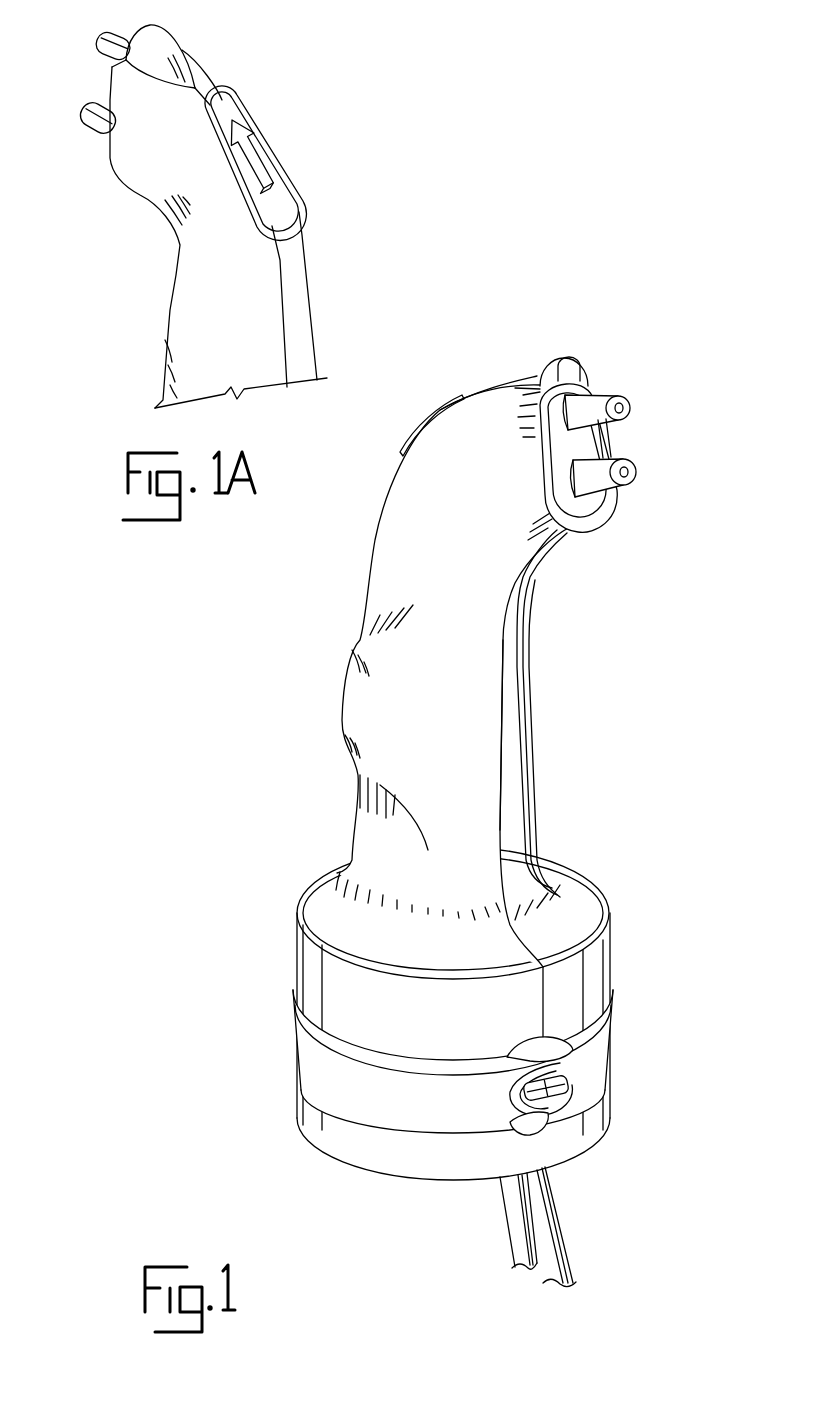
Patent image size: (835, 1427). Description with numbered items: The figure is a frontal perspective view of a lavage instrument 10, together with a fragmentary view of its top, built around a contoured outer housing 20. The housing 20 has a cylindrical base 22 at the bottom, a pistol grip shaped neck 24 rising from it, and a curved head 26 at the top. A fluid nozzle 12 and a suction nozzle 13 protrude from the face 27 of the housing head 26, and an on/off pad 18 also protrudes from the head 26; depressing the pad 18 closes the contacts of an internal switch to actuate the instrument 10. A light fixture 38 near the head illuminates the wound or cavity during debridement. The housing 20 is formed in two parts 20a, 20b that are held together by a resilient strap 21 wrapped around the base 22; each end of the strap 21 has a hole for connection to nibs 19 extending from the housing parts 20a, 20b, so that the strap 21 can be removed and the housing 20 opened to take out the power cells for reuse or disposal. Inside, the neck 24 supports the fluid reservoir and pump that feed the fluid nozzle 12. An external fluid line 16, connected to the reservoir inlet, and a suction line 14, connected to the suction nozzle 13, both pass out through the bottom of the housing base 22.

In FIG. 1, the lavage instrument 10 is at (203, 649).
In FIG. 1A, the fluid nozzle 12 is at (117, 40).
In FIG. 1, the fluid nozzle 12 is at (590, 408).
In FIG. 1A, the suction nozzle 13 is at (92, 105).
In FIG. 1, the suction nozzle 13 is at (623, 465).
In FIG. 1, the suction line 14 is at (518, 1225).
In FIG. 1, the external fluid line 16 is at (540, 1206).
In FIG. 1A, the on/off pad 18 is at (263, 170).
In FIG. 1, the on/off pad 18 is at (422, 420).
In FIG. 1, the nibs 19 is at (597, 1057).
In FIG. 1A, the contoured outer housing 20 is at (153, 163).
In FIG. 1, the contoured outer housing 20 is at (334, 695).
In FIG. 1A, the housing part 20a is at (267, 303).
In FIG. 1, the housing part 20a is at (663, 633).
In FIG. 1A, the housing part 20b is at (293, 305).
In FIG. 1, the housing part 20b is at (493, 589).
In FIG. 1, the resilient strap 21 is at (426, 1077).
In FIG. 1, the cylindrical base 22 is at (347, 1135).
In FIG. 1, the neck 24 is at (517, 740).
In FIG. 1A, the curved head 26 is at (205, 85).
In FIG. 1, the curved head 26 is at (487, 407).
In FIG. 1, the face 27 is at (563, 440).
In FIG. 1, the light fixture 38 is at (563, 370).